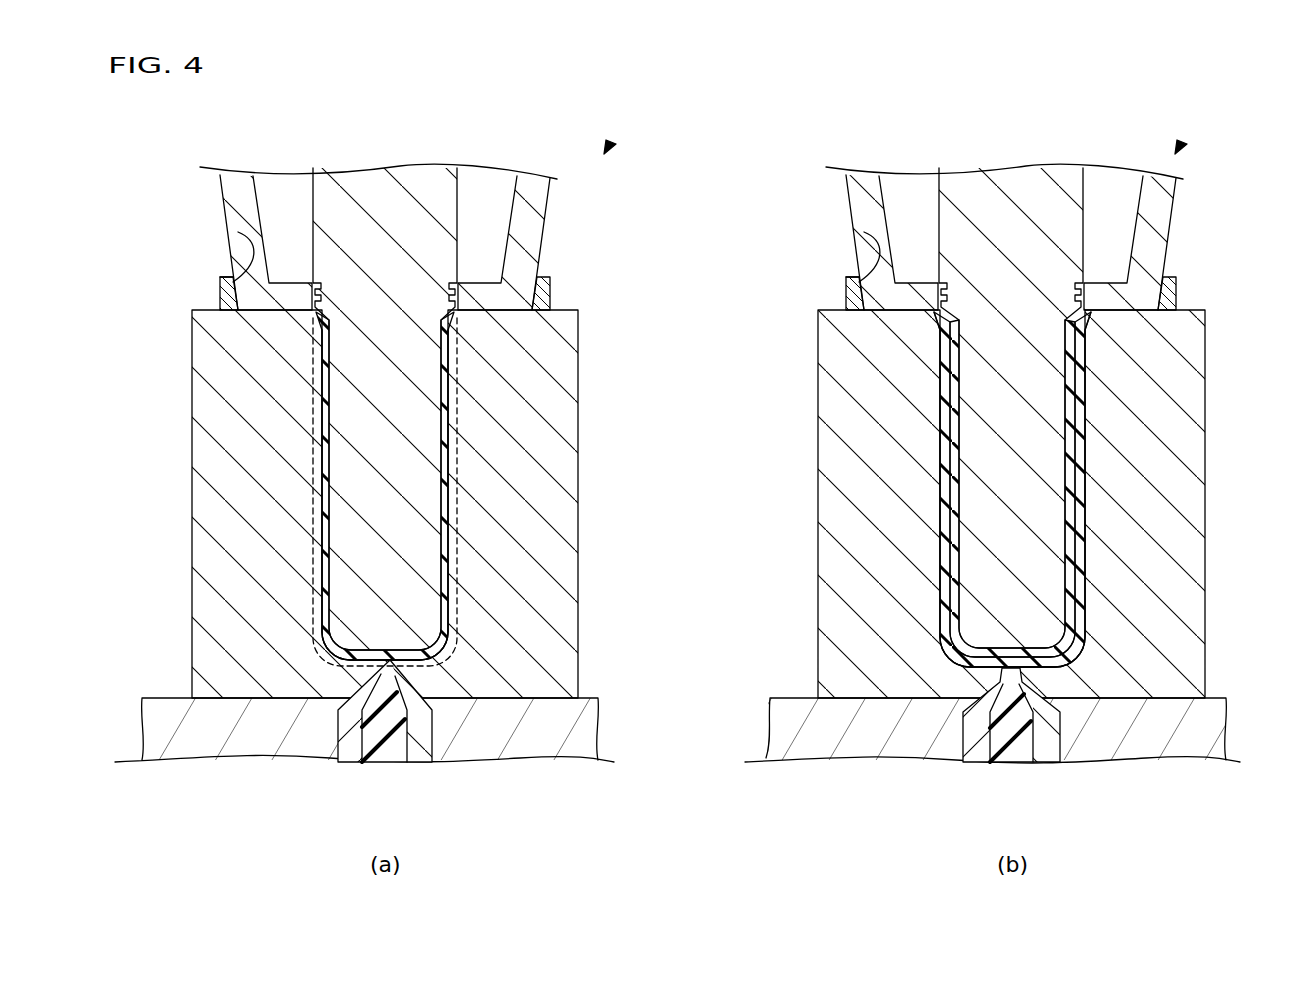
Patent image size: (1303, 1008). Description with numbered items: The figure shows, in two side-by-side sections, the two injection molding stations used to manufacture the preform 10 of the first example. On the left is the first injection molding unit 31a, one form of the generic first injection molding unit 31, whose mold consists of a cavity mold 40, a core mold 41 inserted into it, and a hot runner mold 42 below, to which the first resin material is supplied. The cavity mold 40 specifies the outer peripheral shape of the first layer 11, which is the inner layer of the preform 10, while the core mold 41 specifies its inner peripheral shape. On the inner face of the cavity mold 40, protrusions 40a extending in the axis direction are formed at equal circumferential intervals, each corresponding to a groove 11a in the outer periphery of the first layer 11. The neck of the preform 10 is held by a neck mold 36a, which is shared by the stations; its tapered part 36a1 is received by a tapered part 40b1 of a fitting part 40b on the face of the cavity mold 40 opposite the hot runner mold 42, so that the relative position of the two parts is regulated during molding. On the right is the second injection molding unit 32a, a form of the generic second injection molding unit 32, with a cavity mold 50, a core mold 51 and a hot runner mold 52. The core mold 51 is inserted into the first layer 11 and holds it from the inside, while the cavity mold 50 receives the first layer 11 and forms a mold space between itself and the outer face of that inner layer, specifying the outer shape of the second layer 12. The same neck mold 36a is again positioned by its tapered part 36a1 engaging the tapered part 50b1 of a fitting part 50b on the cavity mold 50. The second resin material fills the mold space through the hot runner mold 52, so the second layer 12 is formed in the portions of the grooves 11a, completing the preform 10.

The preform 10 is at (1017, 489).
The first layer 11 is at (452, 392).
The groove 11a is at (457, 457).
The second layer 12 is at (1086, 472).
The first injection molding unit 31a is at (608, 148).
The first injection molding unit 31 is at (610, 147).
The second injection molding unit 32a is at (1179, 148).
The second injection molding unit 32 is at (1181, 147).
The neck mold 36a is at (227, 243).
The tapered part 36a1 is at (237, 233).
The cavity mold 40 is at (586, 568).
The protrusion 40a is at (440, 526).
The fitting part 40b is at (219, 303).
The tapered part 40b1 is at (220, 279).
The core mold 41 is at (462, 207).
The hot runner mold 42 is at (515, 752).
The cavity mold 50 is at (1207, 570).
The fitting part 50b is at (845, 303).
The tapered part 50b1 is at (846, 279).
The core mold 51 is at (1088, 207).
The hot runner mold 52 is at (1143, 752).